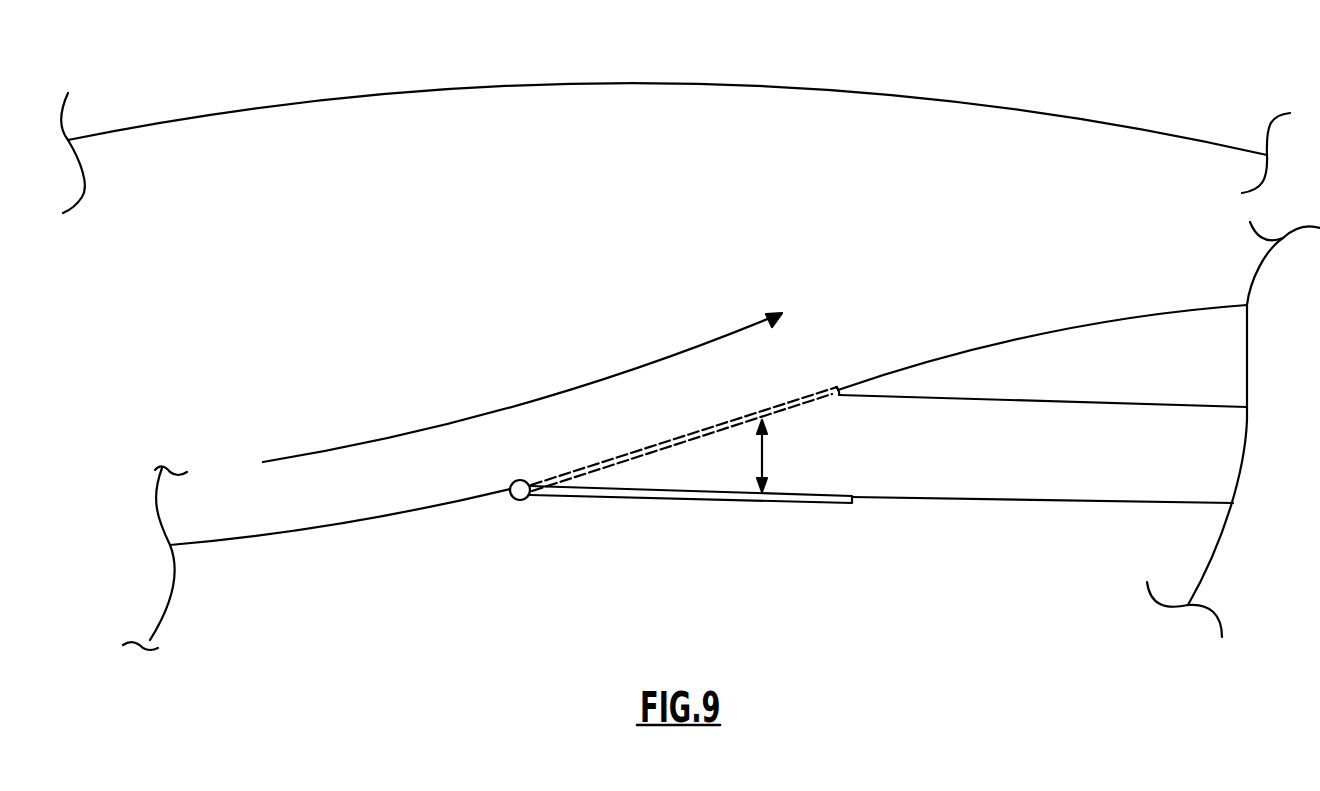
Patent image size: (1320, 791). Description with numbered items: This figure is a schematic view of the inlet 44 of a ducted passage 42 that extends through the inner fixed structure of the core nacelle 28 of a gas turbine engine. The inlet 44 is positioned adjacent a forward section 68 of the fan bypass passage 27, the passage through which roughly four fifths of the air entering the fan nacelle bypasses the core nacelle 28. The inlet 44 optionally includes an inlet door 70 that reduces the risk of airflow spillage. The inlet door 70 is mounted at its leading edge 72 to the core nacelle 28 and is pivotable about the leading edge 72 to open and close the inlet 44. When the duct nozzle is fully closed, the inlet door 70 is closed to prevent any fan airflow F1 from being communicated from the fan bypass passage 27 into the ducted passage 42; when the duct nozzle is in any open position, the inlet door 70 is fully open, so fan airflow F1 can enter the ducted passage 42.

The fan bypass passage 27 is at (328, 193).
The forward section 68 is at (198, 287).
The core nacelle 28 is at (327, 526).
The leading edge 72 is at (520, 500).
The inlet door 70 is at (677, 495).
The inlet 44 is at (805, 382).
The ducted passage 42 is at (1068, 472).
The fan airflow F1 is at (538, 377).